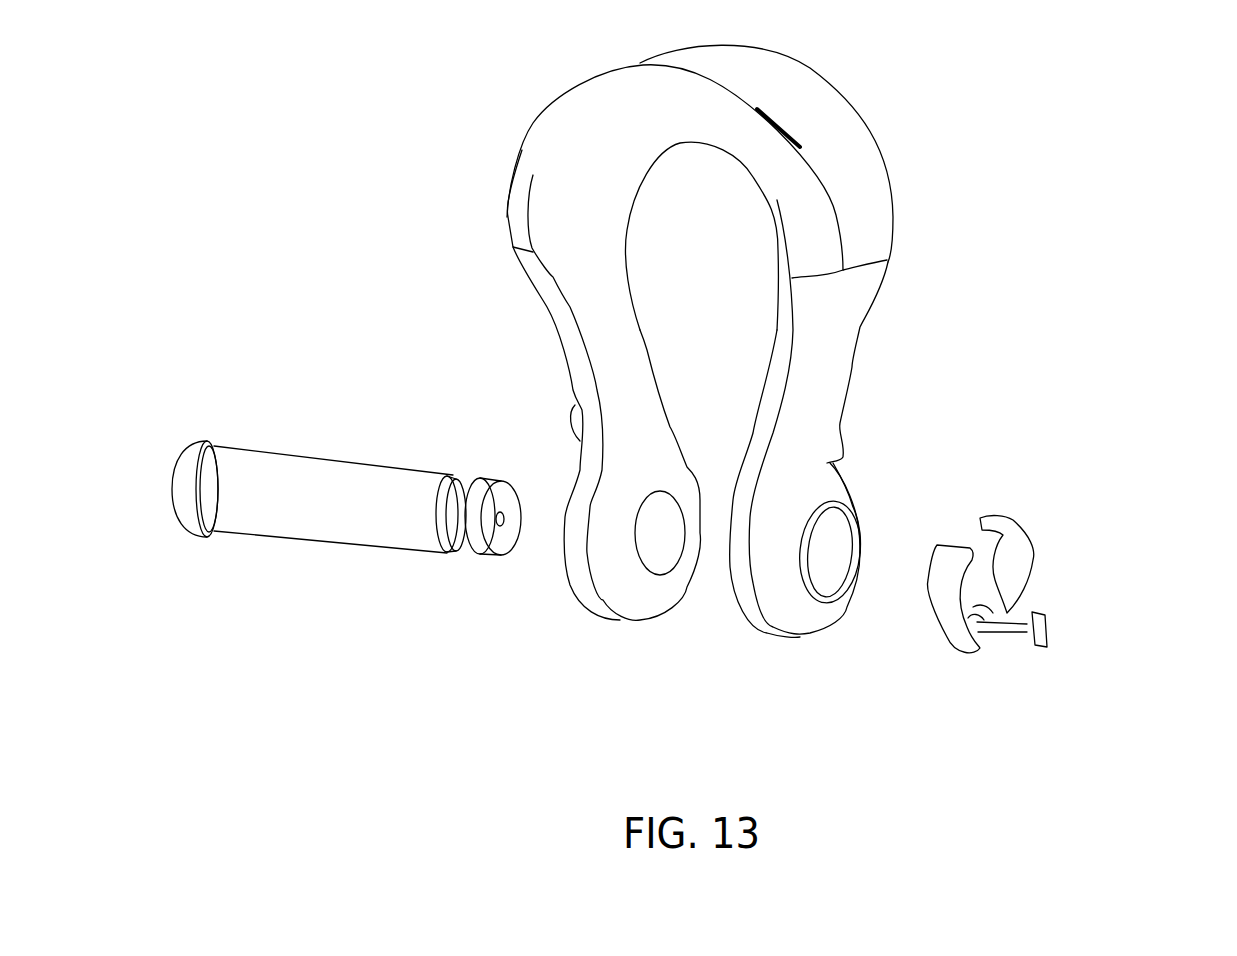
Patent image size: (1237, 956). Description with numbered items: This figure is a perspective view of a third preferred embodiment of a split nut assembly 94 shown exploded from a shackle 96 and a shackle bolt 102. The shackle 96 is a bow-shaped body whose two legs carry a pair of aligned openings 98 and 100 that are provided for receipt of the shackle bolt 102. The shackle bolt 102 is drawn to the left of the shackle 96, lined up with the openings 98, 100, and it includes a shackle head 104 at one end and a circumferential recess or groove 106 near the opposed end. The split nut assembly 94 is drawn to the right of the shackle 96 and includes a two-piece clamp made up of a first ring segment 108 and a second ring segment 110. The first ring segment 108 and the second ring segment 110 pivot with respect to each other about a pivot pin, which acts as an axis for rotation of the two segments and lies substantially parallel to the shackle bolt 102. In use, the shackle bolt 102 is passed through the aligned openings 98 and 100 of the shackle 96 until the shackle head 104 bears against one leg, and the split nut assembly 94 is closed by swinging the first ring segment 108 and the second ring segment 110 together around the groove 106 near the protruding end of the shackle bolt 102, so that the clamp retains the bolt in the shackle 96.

The split nut assembly 94 is at (1098, 601).
The shackle 96 is at (847, 343).
The aligned opening 98 is at (653, 573).
The aligned opening 100 is at (820, 597).
The shackle bolt 102 is at (373, 477).
The shackle head 104 is at (203, 443).
The circumferential recess or groove 106 is at (467, 483).
The first ring segment 108 is at (935, 598).
The second ring segment 110 is at (1027, 547).